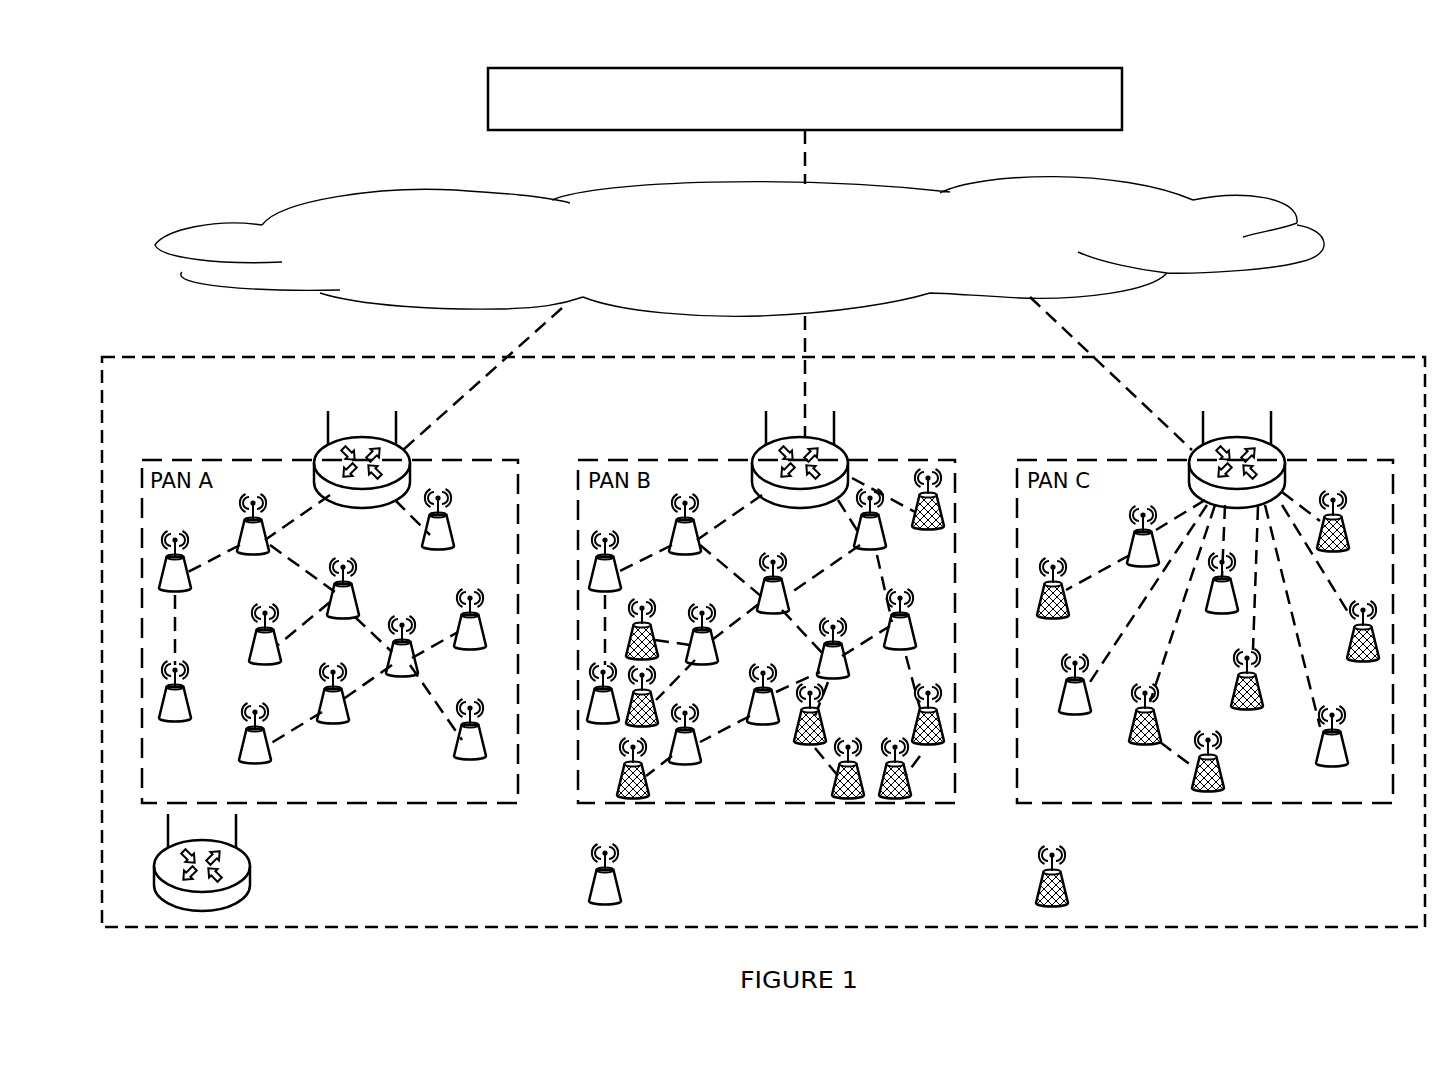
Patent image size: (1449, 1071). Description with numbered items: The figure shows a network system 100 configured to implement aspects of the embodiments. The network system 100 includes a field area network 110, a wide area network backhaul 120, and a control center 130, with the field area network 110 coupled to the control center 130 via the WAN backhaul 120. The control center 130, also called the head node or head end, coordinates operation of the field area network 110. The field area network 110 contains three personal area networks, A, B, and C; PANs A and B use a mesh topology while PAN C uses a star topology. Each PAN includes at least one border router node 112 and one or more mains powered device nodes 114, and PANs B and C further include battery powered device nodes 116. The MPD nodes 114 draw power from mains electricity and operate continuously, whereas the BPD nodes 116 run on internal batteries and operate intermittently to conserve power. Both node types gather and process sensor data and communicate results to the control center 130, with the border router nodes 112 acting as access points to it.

The network system 100 is at (1351, 118).
The field area network 110 is at (402, 392).
The border router node 112 is at (250, 874).
The mains powered device node 114 is at (618, 884).
The battery powered device node 116 is at (1066, 885).
The wide area network backhaul 120 is at (880, 253).
The control center 130 is at (930, 111).